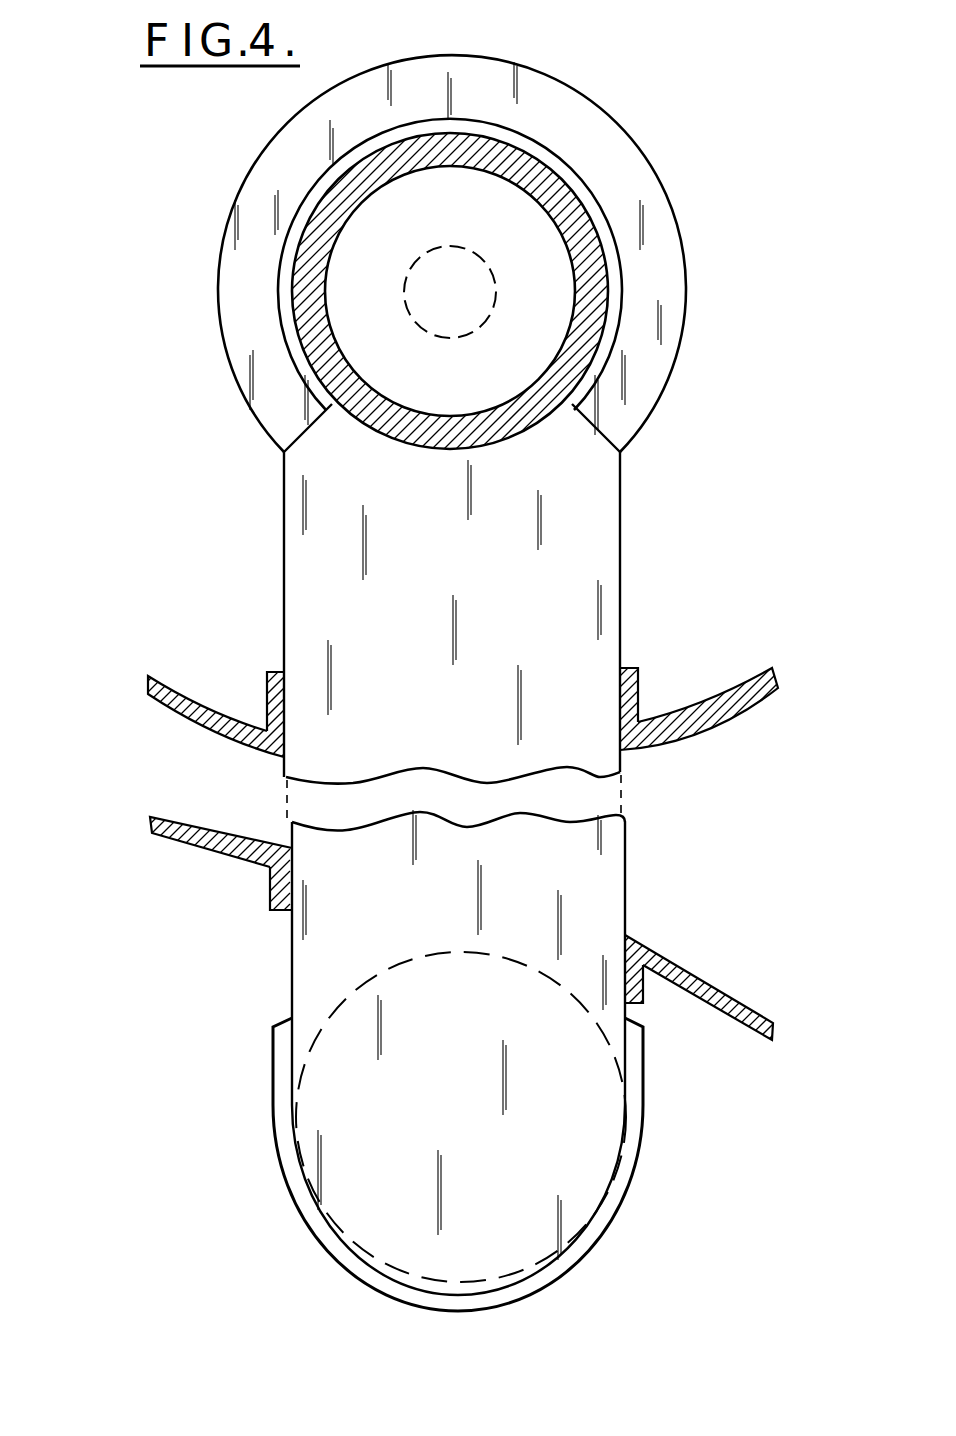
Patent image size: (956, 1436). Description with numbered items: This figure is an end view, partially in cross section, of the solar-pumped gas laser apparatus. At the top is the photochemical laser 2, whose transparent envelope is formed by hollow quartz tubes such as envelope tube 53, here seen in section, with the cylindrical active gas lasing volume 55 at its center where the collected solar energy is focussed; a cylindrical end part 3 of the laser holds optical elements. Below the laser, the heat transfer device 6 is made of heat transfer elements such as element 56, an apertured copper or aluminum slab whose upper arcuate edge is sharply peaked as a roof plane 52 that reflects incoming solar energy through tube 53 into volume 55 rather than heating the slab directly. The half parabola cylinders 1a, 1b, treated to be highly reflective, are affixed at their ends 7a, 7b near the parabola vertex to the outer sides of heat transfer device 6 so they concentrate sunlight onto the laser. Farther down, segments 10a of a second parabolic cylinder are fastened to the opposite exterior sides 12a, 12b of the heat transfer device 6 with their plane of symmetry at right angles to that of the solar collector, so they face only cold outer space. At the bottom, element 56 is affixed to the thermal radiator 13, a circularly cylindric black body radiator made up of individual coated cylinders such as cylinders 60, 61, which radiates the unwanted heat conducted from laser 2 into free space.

The photochemical laser 2 is at (452, 42).
The cylindrical end part 3 is at (206, 294).
The roof plane 52 is at (566, 94).
The envelope tube 53 is at (576, 202).
The active gas lasing volume 55 is at (477, 256).
The heat transfer element 56 is at (605, 490).
The heat transfer device 6 is at (238, 537).
The end of half parabola cylinder 7a is at (638, 668).
The end of half parabola cylinder 7b is at (268, 672).
The half parabola cylinder 1a is at (182, 712).
The half parabola cylinder 1b is at (728, 716).
The parabola segment 10a is at (188, 838).
The exterior side of heat transfer device 12a is at (266, 912).
The exterior side of heat transfer device 12b is at (640, 1005).
The thermal radiator 13 is at (258, 1129).
The radiator cylinder 60 is at (613, 1127).
The radiator cylinder 61 is at (617, 1226).